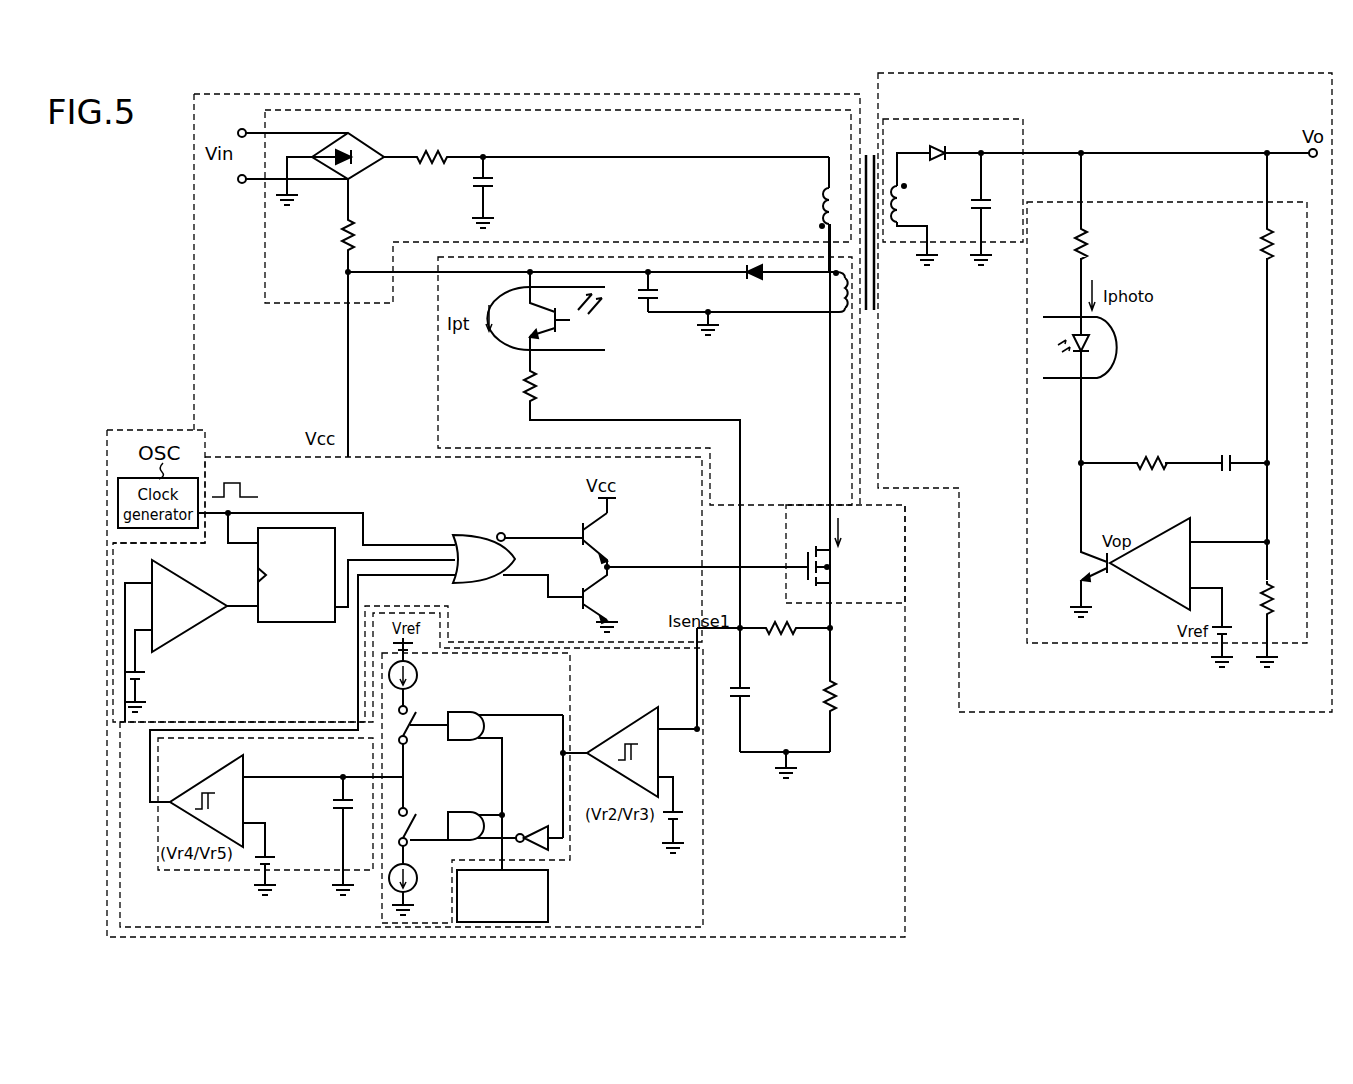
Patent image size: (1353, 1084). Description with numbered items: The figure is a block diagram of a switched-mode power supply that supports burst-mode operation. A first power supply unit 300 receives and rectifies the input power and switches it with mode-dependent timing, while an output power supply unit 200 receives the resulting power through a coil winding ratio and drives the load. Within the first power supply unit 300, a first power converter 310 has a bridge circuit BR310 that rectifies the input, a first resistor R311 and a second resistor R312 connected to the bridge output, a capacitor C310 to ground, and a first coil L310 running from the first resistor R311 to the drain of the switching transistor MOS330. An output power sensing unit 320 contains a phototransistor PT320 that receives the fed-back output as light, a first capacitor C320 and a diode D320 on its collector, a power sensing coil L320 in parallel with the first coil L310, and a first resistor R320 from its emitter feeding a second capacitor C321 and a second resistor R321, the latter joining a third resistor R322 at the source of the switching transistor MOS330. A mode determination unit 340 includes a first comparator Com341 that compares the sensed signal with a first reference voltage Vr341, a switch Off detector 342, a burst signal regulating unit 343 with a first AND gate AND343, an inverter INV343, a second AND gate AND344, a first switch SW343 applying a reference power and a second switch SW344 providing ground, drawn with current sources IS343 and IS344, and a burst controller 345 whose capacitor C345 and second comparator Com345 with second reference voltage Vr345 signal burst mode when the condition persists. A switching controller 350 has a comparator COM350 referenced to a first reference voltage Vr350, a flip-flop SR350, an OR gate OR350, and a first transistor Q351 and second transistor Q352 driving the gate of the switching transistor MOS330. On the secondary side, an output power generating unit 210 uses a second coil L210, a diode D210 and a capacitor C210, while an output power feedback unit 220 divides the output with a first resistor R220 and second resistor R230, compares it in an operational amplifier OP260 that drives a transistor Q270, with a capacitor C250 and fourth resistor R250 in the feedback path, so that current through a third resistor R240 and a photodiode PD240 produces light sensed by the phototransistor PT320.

The output power supply unit 200 is at (1074, 712).
The output power generating unit 210 is at (952, 119).
The output power feedback unit 220 is at (1078, 644).
The first power supply unit 300 is at (194, 205).
The first power converter 310 is at (265, 281).
The output power sensing unit 320 is at (438, 349).
The mode determination unit 340 is at (704, 886).
The switch Off detector 342 is at (548, 897).
The burst signal regulating unit 343 is at (382, 909).
The burst controller 345 is at (212, 871).
The switching controller 350 is at (388, 457).
The bridge circuit BR310 is at (372, 145).
The first resistor R311 is at (430, 171).
The second resistor R312 is at (326, 234).
The capacitor C310 is at (511, 192).
The first coil L310 is at (803, 214).
The power sensing coil L320 is at (842, 315).
The diode D320 is at (760, 285).
The first capacitor C320 is at (672, 292).
The phototransistor PT320 is at (546, 320).
The first resistor R320 is at (632, 498).
The switching transistor MOS330 is at (754, 573).
The second resistor R321 is at (779, 640).
The third resistor R322 is at (852, 690).
The second capacitor C321 is at (756, 690).
The flip-flop SR350 is at (298, 622).
The comparator COM350 is at (193, 634).
The first reference voltage Vr350 is at (157, 692).
The OR gate OR350 is at (461, 535).
The first transistor Q351 is at (617, 540).
The second transistor Q352 is at (617, 599).
The second comparator Com345 is at (302, 716).
The capacitor C345 is at (320, 836).
The second reference voltage Vr345 is at (282, 865).
The current source IS343 is at (425, 675).
The current source IS344 is at (420, 889).
The first switch SW343 is at (423, 733).
The second switch SW344 is at (423, 831).
The first AND gate AND343 is at (505, 780).
The second AND gate AND344 is at (479, 815).
The inverter INV343 is at (531, 826).
The first comparator Com341 is at (617, 723).
The first reference voltage Vr341 is at (658, 832).
The second coil L210 is at (919, 209).
The diode D210 is at (951, 144).
The capacitor C210 is at (966, 209).
The third resistor R240 is at (1101, 235).
The first resistor R220 is at (1246, 366).
The photodiode PD240 is at (1108, 390).
The fourth resistor R250 is at (1151, 454).
The capacitor C250 is at (1227, 450).
The operational amplifier OP260 is at (1150, 533).
The transistor Q270 is at (1077, 540).
The second resistor R230 is at (1254, 624).